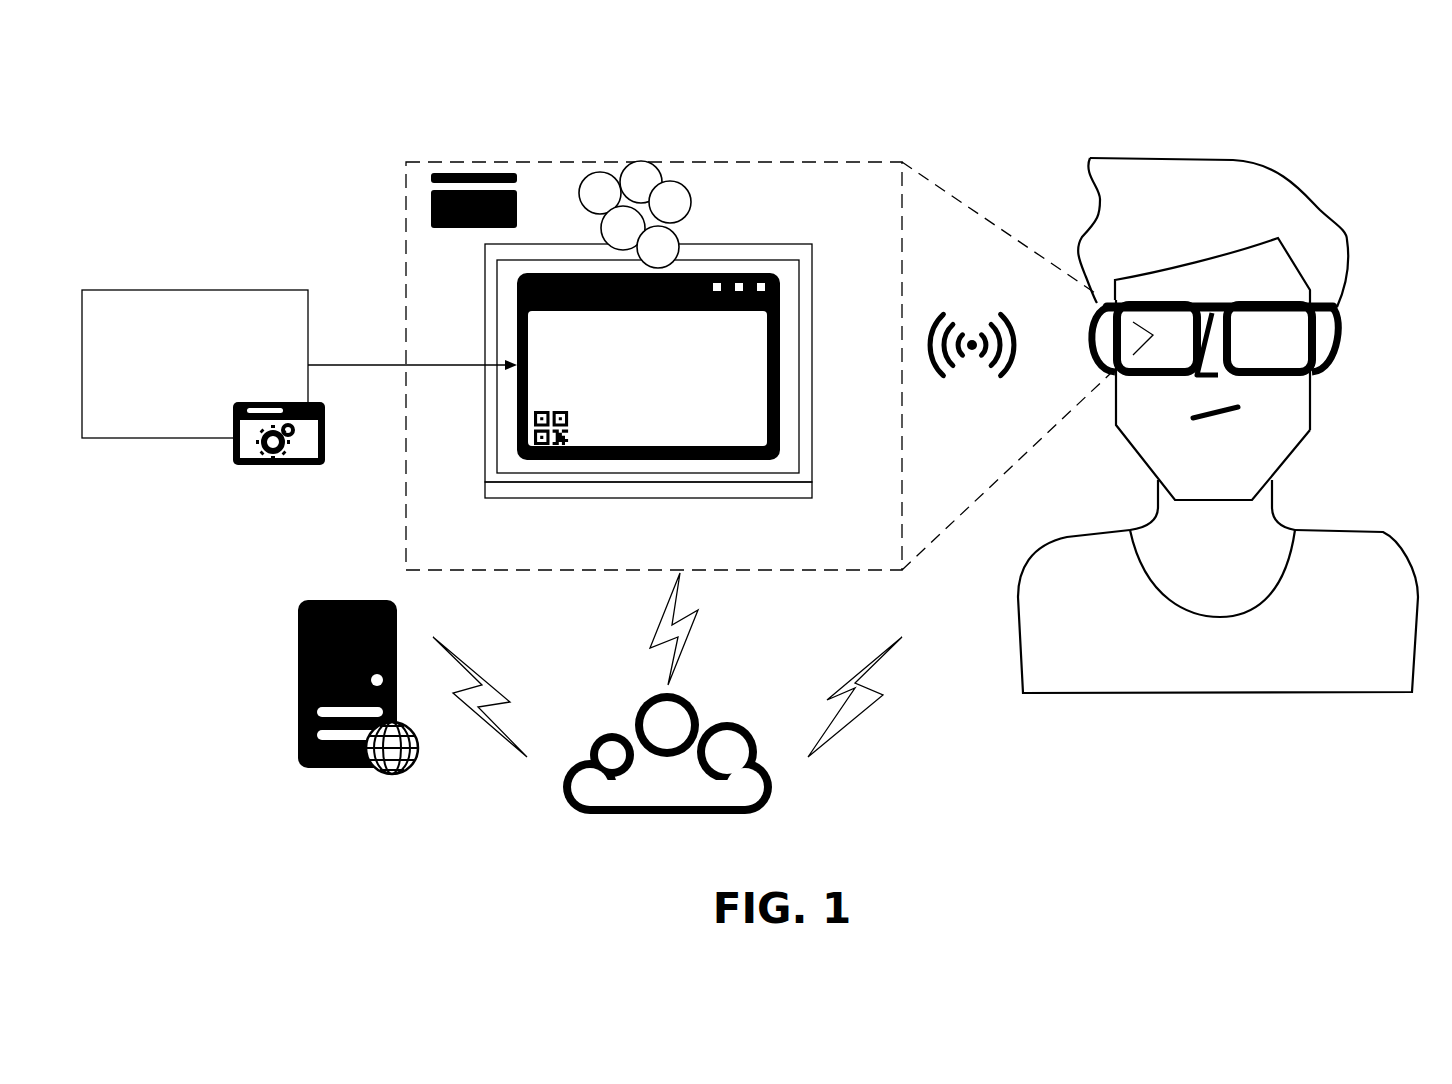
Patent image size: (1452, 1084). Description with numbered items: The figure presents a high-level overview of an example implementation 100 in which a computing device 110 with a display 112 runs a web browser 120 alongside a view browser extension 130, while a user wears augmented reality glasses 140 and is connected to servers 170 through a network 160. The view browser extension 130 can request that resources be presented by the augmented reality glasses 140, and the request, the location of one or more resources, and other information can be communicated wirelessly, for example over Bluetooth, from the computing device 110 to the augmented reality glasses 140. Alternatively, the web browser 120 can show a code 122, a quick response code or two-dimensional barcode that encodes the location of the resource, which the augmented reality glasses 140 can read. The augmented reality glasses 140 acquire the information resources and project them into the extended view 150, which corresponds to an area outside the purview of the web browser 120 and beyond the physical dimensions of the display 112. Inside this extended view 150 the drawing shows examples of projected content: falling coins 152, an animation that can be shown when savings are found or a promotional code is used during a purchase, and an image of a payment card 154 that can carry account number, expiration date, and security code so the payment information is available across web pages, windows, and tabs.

The implementation 100 is at (1178, 103).
The computing device 110 is at (772, 244).
The display 112 is at (800, 277).
The web browser 120 is at (780, 355).
The code 122 is at (568, 435).
The view browser extension 130 is at (227, 290).
The augmented reality glasses 140 is at (1333, 305).
The extended view 150 is at (835, 162).
The falling coins 152 is at (637, 162).
The payment card 154 is at (478, 173).
The network 160 is at (690, 700).
The servers 170 is at (350, 597).